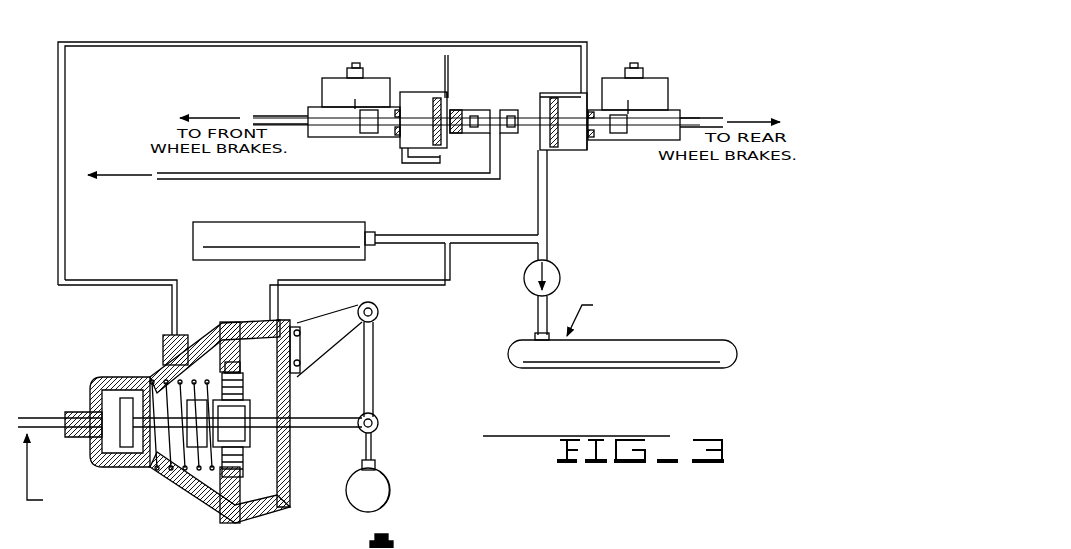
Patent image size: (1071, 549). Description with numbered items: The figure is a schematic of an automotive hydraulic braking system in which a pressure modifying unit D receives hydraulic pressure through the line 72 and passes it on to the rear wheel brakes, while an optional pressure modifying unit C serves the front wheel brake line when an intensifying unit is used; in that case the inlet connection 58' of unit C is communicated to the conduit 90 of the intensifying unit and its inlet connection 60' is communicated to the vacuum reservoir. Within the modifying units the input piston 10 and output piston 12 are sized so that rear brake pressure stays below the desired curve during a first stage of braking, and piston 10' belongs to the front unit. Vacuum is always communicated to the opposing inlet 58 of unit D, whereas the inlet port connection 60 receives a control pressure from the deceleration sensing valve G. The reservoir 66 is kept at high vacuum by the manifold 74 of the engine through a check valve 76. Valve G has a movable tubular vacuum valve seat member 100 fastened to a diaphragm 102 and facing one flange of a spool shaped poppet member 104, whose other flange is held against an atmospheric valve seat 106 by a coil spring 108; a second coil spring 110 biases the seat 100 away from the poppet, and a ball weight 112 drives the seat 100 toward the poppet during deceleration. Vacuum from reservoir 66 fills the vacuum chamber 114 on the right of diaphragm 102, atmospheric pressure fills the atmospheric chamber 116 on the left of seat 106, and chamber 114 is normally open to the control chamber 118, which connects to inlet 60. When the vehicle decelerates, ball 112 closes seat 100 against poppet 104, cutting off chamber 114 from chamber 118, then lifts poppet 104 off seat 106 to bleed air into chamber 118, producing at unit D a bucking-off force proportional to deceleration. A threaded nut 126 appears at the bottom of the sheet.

The pressure modifying unit C is at (316, 78).
The pressure modifying unit D is at (670, 74).
The deceleration sensing valve G is at (231, 420).
The input piston 10 is at (515, 107).
The piston 10' is at (473, 107).
The output piston 12 is at (620, 134).
The inlet 58 is at (559, 245).
The inlet connection 58' is at (469, 76).
The inlet port connection 60 is at (563, 103).
The inlet connection 60' is at (402, 128).
The reservoir 66 is at (193, 235).
The line 72 is at (430, 179).
The manifold 74 is at (600, 357).
The check valve 76 is at (555, 267).
The conduit 90 is at (445, 72).
The vacuum valve seat member 100 is at (210, 500).
The diaphragm 102 is at (297, 378).
The poppet member 104 is at (131, 378).
The atmospheric valve seat 106 is at (95, 457).
The coil spring 108 is at (123, 423).
The coil spring 110 is at (192, 375).
The ball weight 112 is at (380, 487).
The vacuum chamber 114 is at (270, 470).
The atmospheric chamber 116 is at (115, 377).
The control chamber 118 is at (180, 480).
The threaded nut 126 is at (395, 542).